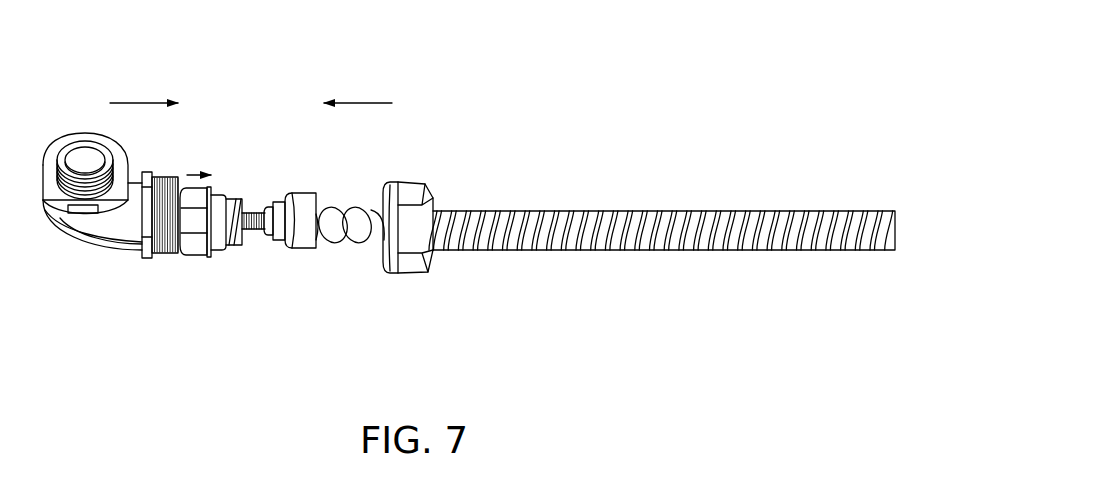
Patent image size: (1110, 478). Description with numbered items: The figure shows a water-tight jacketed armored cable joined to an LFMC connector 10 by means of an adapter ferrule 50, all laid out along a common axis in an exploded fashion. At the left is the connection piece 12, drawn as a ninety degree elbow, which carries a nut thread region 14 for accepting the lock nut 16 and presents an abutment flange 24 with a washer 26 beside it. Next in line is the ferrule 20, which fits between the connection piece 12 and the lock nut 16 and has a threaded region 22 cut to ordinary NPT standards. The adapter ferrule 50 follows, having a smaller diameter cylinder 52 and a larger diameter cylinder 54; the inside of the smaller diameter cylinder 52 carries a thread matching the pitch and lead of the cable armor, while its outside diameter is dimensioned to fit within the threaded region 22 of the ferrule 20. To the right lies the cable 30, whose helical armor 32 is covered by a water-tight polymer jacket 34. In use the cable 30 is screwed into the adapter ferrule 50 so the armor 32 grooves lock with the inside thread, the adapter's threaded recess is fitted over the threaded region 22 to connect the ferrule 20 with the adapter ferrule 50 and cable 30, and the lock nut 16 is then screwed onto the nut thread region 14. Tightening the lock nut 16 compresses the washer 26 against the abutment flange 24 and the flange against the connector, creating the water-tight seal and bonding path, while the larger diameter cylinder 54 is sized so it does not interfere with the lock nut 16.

The LFMC connector 10 is at (76, 116).
The connection piece 12 is at (123, 242).
The nut thread region 14 is at (167, 188).
The lock nut 16 is at (407, 264).
The ferrule 20 is at (243, 175).
The threaded region 22 is at (238, 246).
The abutment flange 24 is at (206, 258).
The washer 26 is at (213, 187).
The cable 30 is at (809, 191).
The armor 32 is at (355, 234).
The water-tight polymer jacket 34 is at (640, 211).
The adapter ferrule 50 is at (296, 285).
The smaller diameter cylinder 52 is at (274, 192).
The larger diameter cylinder 54 is at (305, 191).